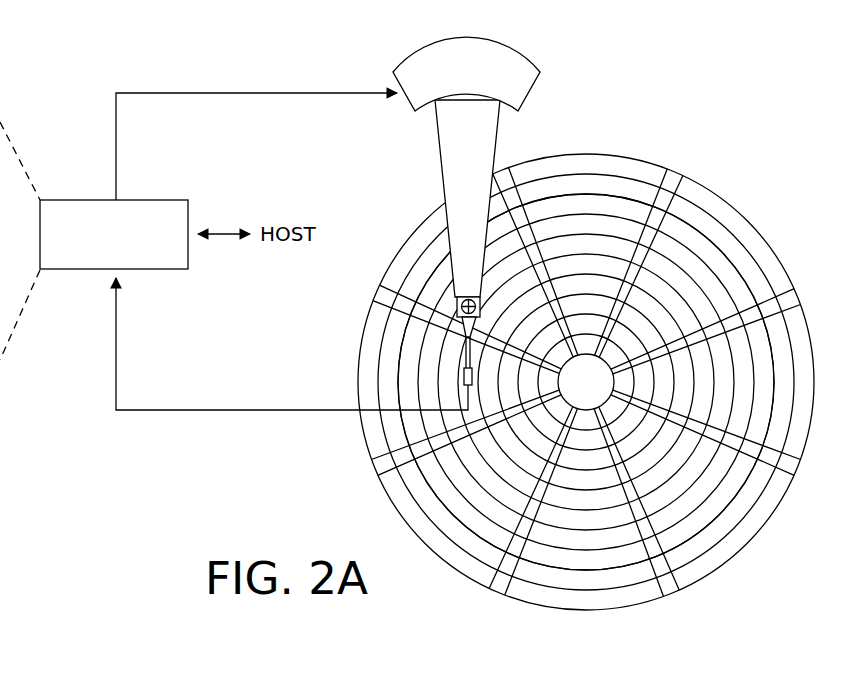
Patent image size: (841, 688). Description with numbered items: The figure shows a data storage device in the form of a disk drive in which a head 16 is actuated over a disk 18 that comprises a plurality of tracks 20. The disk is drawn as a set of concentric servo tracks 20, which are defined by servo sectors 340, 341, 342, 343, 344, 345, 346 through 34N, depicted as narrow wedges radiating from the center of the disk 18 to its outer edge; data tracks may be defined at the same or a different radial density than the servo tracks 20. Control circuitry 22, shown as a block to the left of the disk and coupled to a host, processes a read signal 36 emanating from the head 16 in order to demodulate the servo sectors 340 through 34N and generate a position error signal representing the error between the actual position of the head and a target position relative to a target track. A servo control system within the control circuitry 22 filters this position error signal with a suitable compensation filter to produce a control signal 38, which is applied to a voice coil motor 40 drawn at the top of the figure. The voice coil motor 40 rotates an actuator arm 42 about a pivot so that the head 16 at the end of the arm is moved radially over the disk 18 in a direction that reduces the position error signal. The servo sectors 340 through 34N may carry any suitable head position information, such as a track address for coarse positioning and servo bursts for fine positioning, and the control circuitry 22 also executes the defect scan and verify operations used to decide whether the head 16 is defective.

The head 16 is at (461, 376).
The disk 18 is at (745, 204).
The tracks 20 is at (584, 185).
The control circuitry 22 is at (154, 200).
The servo sector 340 is at (676, 173).
The servo sector 341 is at (797, 297).
The servo sector 342 is at (797, 466).
The servo sector 343 is at (668, 588).
The servo sector 344 is at (497, 587).
The servo sector 345 is at (374, 464).
The servo sector 346 is at (384, 284).
The servo sector 34N is at (500, 172).
The read signal 36 is at (241, 410).
The control signal 38 is at (116, 133).
The voice coil motor 40 is at (412, 104).
The actuator arm 42 is at (446, 185).